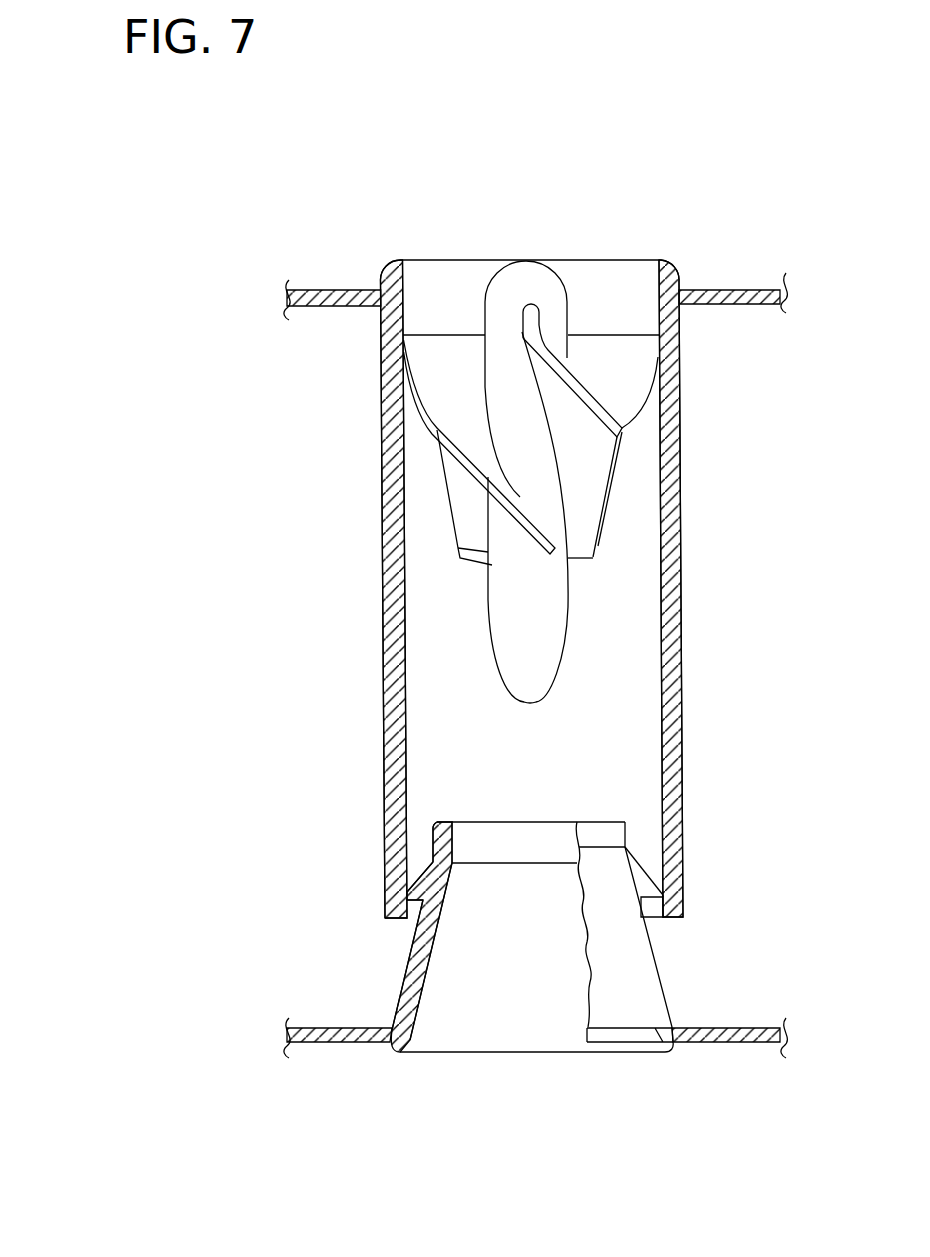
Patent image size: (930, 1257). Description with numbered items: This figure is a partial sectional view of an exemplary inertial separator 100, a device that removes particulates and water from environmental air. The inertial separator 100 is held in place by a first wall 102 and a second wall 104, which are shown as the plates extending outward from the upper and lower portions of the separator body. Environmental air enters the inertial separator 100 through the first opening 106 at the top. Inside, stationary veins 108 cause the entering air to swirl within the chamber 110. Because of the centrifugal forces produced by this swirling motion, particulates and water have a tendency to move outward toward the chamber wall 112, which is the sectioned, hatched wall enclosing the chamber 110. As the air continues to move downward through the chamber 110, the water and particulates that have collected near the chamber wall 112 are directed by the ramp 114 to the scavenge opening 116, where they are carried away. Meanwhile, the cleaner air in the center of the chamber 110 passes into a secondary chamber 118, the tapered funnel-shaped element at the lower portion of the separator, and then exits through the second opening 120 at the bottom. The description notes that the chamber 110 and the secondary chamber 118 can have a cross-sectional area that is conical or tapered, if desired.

The inertial separator 100 is at (125, 237).
The first wall 102 is at (733, 297).
The second wall 104 is at (745, 1037).
The first opening 106 is at (440, 270).
The stationary veins 108 is at (583, 428).
The chamber 110 is at (630, 633).
The chamber wall 112 is at (678, 692).
The ramp 114 is at (425, 876).
The scavenge opening 116 is at (652, 908).
The secondary chamber 118 is at (462, 937).
The second opening 120 is at (500, 1055).